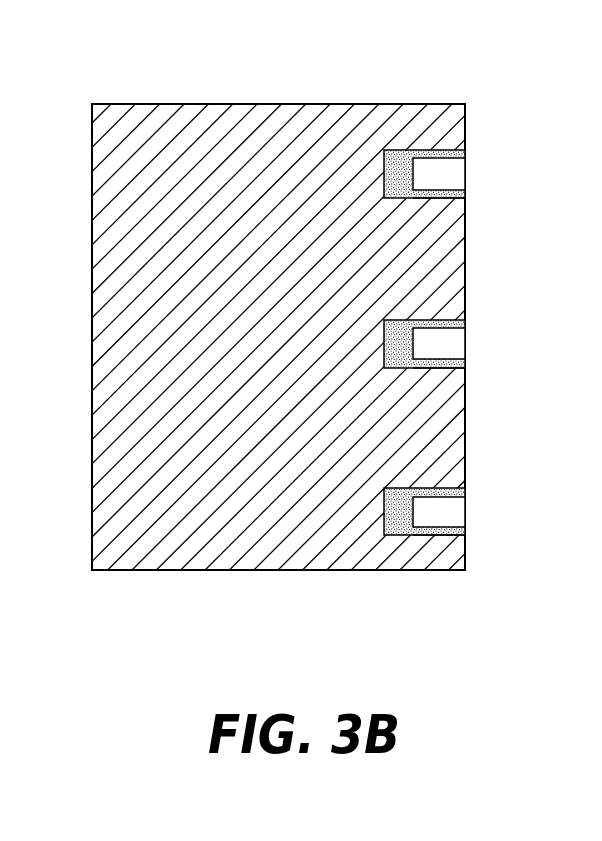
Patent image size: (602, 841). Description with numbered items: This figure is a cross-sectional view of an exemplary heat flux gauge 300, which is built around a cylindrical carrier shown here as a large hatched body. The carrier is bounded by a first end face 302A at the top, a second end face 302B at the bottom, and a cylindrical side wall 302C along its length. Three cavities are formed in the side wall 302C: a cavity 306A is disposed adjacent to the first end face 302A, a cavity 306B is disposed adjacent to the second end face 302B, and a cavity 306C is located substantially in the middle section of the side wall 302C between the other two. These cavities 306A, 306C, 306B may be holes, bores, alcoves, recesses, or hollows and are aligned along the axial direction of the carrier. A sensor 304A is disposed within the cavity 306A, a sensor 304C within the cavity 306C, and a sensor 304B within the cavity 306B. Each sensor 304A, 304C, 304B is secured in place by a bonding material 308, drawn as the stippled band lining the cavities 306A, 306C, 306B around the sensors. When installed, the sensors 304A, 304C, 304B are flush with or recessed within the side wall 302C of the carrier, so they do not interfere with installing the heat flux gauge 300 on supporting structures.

The heat flux gauge 300 is at (445, 45).
The first end face 302A is at (153, 103).
The second end face 302B is at (132, 570).
The cylindrical side wall 302C is at (92, 415).
The sensor 304A is at (458, 176).
The sensor 304C is at (458, 347).
The sensor 304B is at (458, 515).
The cavity 306A is at (432, 153).
The cavity 306C is at (432, 323).
The cavity 306B is at (432, 491).
The bonding material 308 is at (455, 197).